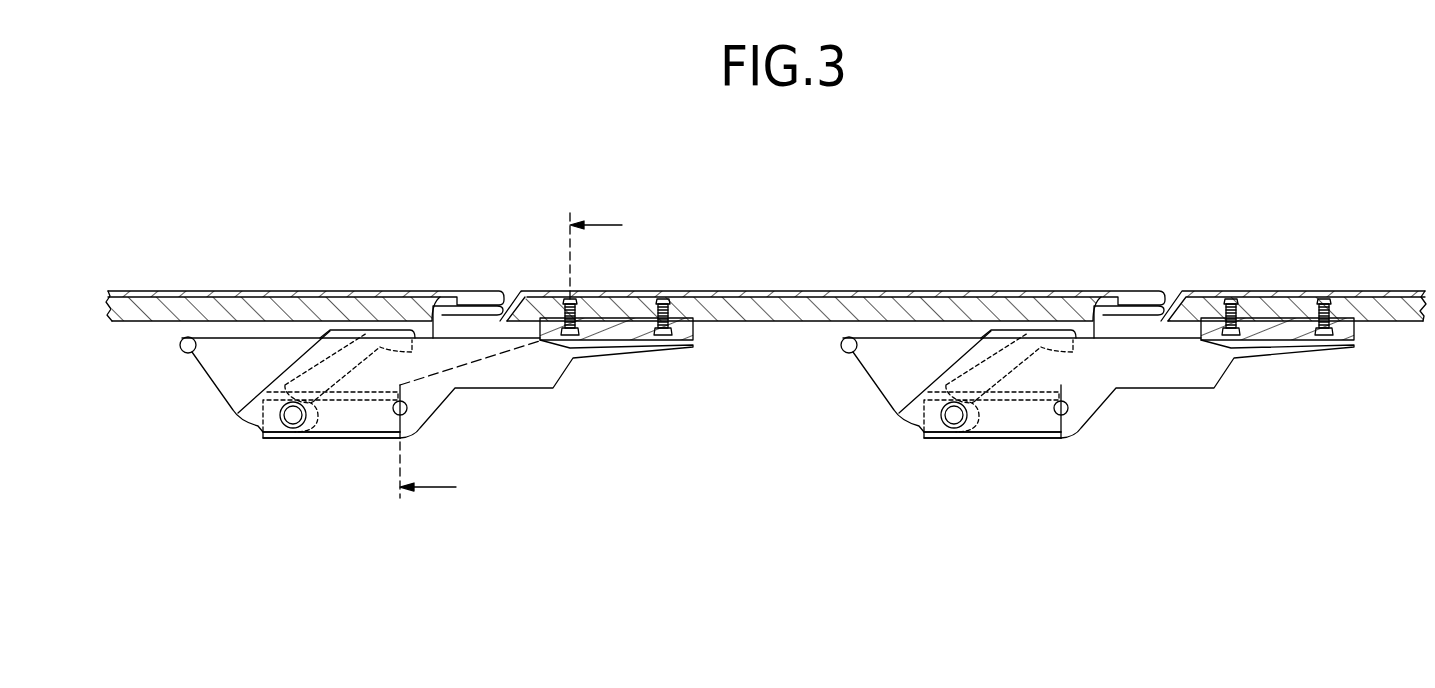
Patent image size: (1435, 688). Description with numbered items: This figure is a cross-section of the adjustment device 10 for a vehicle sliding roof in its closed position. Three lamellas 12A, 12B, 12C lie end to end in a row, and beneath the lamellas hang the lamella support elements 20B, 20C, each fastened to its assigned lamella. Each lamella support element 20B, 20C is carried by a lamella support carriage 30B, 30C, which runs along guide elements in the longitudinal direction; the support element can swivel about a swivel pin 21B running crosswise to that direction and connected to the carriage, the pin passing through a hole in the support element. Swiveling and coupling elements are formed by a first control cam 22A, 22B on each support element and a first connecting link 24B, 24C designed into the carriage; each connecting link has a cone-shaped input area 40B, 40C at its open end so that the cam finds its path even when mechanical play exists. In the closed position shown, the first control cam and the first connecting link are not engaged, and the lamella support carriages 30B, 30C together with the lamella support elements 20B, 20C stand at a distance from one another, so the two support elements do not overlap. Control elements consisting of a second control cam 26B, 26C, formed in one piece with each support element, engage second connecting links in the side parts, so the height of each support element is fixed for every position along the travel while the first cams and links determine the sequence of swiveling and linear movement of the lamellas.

The adjustment device 10 is at (776, 453).
The lamella 12A is at (201, 305).
The lamella 12B is at (810, 305).
The lamella 12C is at (1293, 305).
The lamella support element 20B is at (357, 413).
The lamella support element 20C is at (1028, 422).
The swivel pin 21B is at (293, 417).
The first control cam 22A is at (185, 352).
The first control cam 22B is at (846, 352).
The first connecting link 24B is at (352, 340).
The slot 24C is at (1040, 340).
The second control cam 26B is at (405, 403).
The second control cam 26C is at (1065, 413).
The lamella support carriage 30B is at (263, 438).
The lamella support carriage 30C is at (925, 438).
The input area 40B is at (426, 301).
The input area 40C is at (1086, 330).